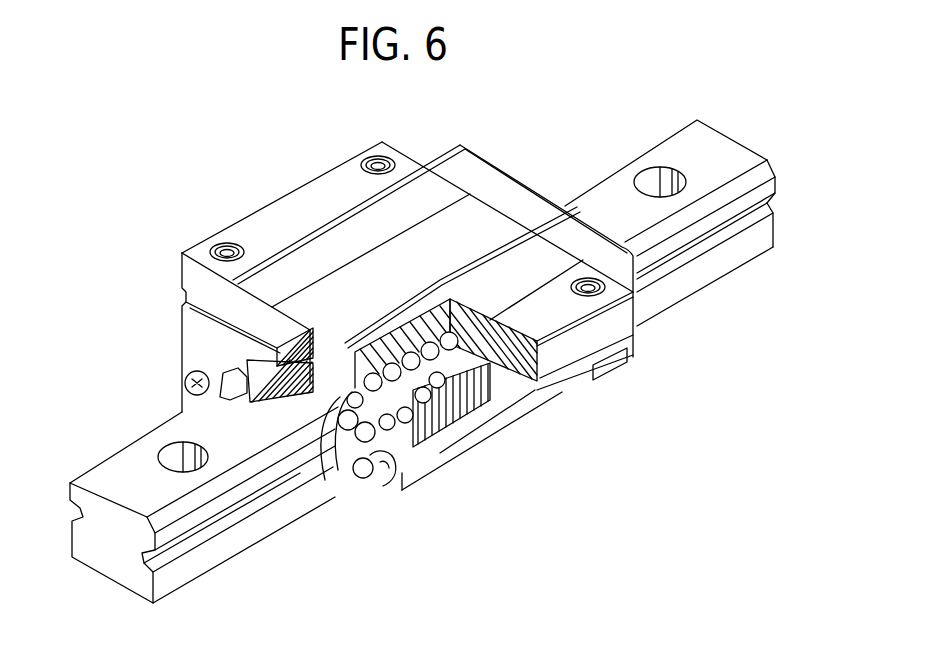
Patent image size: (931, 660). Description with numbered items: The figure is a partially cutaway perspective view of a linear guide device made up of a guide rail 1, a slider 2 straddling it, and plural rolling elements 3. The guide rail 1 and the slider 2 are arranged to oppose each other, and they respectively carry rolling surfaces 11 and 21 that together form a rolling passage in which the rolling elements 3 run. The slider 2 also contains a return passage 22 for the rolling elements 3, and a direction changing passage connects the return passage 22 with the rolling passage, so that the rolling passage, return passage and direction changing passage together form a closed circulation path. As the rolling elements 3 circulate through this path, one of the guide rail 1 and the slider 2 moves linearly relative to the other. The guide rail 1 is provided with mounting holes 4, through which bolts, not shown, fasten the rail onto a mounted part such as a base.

The guide rail 1 is at (710, 140).
The slider 2 is at (485, 202).
The rolling elements 3 is at (470, 410).
The mounting holes 4 is at (172, 455).
The rolling surface 11 is at (77, 481).
The rolling surface 21 is at (325, 480).
The return passage 22 is at (383, 460).